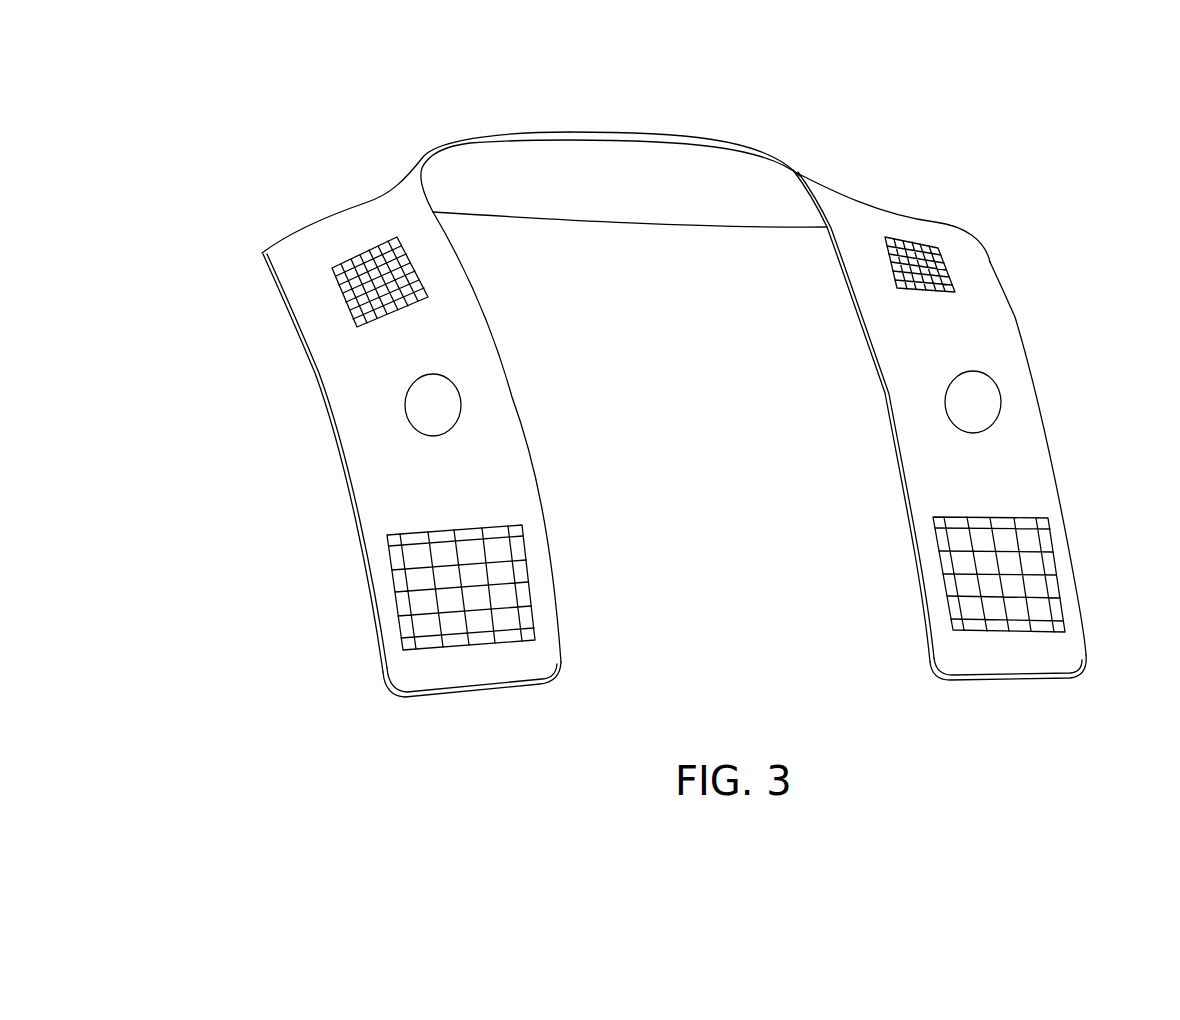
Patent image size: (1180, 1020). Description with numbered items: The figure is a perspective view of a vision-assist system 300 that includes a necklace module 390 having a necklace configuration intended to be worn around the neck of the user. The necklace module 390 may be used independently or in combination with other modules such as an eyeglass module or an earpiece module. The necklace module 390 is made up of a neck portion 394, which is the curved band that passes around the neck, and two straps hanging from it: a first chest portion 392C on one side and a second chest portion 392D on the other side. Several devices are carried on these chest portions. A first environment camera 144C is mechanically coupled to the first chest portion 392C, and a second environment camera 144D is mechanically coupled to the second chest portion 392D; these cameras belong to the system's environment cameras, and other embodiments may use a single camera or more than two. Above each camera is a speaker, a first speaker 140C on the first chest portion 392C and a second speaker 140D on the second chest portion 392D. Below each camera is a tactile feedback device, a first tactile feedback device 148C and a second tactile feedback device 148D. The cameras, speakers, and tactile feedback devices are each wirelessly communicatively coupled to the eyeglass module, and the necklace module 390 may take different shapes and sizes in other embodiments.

The vision-assist system 300 is at (1085, 217).
The necklace module 390 is at (385, 190).
The neck portion 394 is at (580, 131).
The first chest portion 392C is at (356, 450).
The second chest portion 392D is at (985, 329).
The first speaker 140C is at (347, 303).
The second speaker 140D is at (910, 240).
The first environment camera 144C is at (436, 385).
The second environment camera 144D is at (960, 388).
The first tactile feedback device 148C is at (397, 593).
The second tactile feedback device 148D is at (1060, 571).